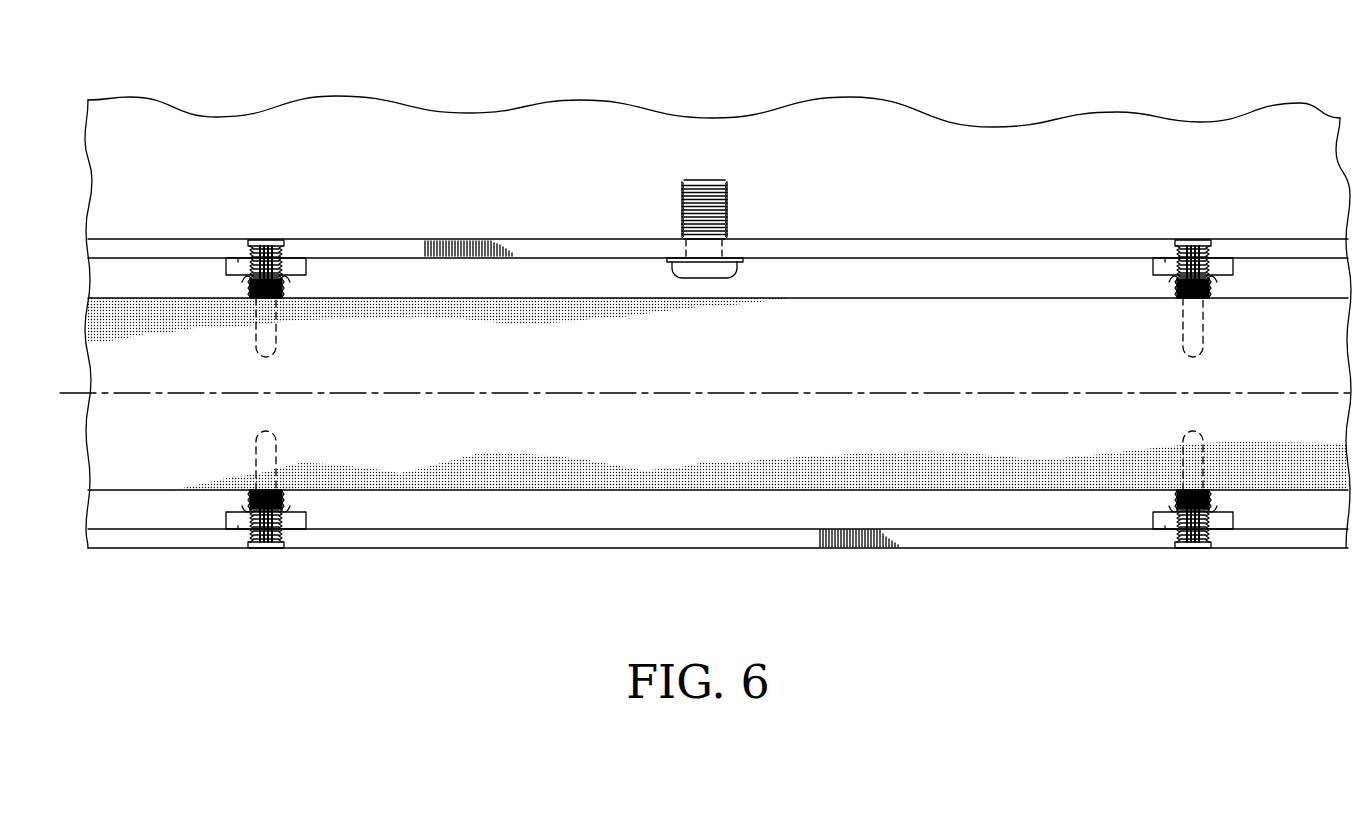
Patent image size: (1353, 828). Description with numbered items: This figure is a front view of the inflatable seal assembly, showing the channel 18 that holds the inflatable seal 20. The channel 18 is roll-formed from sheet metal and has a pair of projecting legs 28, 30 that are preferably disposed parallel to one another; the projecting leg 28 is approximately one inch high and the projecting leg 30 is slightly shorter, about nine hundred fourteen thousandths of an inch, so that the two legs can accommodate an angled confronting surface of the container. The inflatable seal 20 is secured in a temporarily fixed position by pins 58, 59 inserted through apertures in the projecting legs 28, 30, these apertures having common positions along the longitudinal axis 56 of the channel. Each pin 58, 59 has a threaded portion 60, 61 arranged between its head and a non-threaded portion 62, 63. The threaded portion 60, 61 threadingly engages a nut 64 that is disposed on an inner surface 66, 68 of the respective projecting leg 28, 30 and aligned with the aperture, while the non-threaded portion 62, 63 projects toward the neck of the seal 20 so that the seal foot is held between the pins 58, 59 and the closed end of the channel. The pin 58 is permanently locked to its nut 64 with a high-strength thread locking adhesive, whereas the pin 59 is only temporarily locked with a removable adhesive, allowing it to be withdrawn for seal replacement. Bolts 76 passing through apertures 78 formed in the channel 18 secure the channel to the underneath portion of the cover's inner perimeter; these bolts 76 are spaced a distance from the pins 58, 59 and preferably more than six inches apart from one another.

The channel 18 is at (914, 250).
The inflatable seal 20 is at (705, 446).
The projecting leg 28 is at (551, 250).
The projecting leg 30 is at (517, 537).
The longitudinal axis 56 is at (895, 390).
The pin 58 is at (268, 252).
The pin 59 is at (266, 548).
The threaded portion 60 is at (284, 290).
The threaded portion 61 is at (284, 498).
The non-threaded portion 62 is at (270, 334).
The non-threaded portion 63 is at (268, 450).
The nut 64 is at (228, 268).
The inner surface 66 is at (240, 262).
The inner surface 68 is at (240, 522).
The bolt 76 is at (706, 180).
The aperture 78 is at (720, 243).